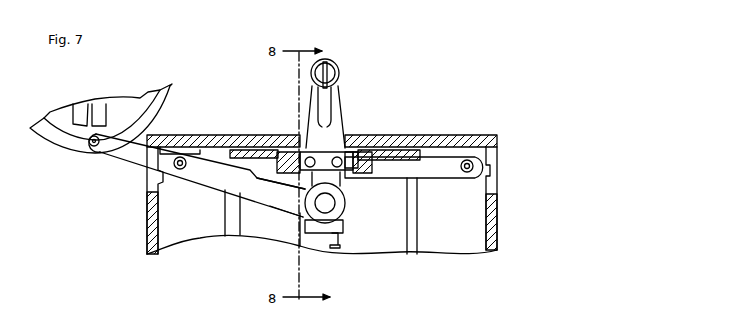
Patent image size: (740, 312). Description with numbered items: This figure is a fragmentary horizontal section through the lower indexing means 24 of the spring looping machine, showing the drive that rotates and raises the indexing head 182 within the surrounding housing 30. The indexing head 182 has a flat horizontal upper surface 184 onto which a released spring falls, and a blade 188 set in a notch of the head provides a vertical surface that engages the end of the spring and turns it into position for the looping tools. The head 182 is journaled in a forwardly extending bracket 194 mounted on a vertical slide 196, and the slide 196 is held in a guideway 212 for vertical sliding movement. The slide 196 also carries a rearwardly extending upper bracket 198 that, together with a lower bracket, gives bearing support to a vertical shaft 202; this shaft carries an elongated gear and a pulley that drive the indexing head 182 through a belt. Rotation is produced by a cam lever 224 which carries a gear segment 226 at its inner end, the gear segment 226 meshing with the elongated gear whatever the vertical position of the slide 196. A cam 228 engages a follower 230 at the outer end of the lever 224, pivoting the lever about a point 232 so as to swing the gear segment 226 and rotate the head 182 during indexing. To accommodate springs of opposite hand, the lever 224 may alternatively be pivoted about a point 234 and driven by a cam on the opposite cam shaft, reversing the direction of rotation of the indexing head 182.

The indexing means 24 is at (380, 83).
The housing 30 is at (445, 135).
The indexing head 182 is at (339, 71).
The upper surface 184 is at (326, 70).
The blade 188 is at (312, 80).
The bracket 194 is at (337, 110).
The slide 196 is at (328, 158).
The upper bracket 198 is at (341, 180).
The vertical shaft 202 is at (320, 196).
The guideway 212 is at (370, 150).
The cam lever 224 is at (192, 168).
The gear segment 226 is at (282, 189).
The cam 228 is at (70, 153).
The follower 230 is at (100, 148).
The pivot point 232 is at (182, 156).
The alternative pivot point 234 is at (465, 172).